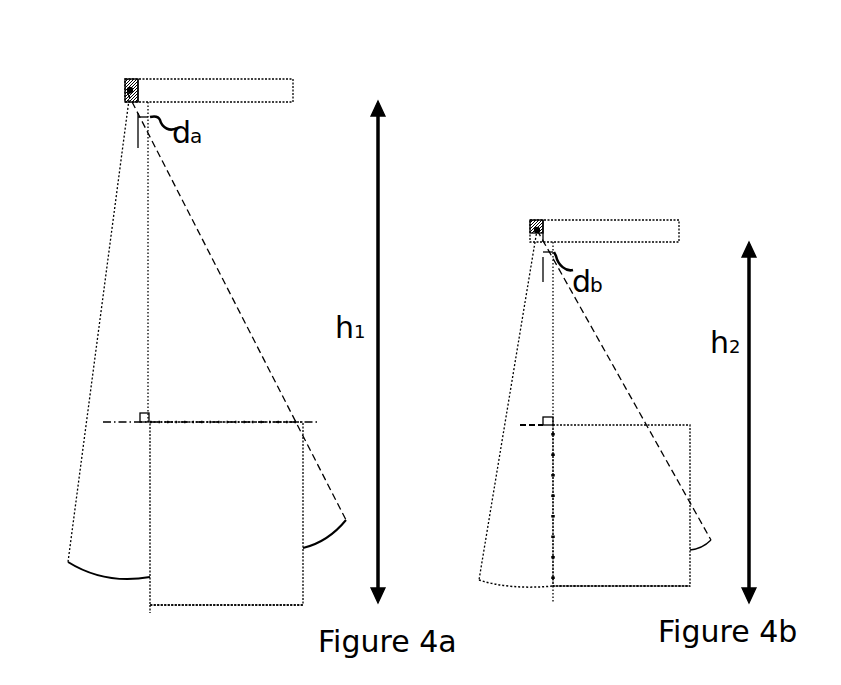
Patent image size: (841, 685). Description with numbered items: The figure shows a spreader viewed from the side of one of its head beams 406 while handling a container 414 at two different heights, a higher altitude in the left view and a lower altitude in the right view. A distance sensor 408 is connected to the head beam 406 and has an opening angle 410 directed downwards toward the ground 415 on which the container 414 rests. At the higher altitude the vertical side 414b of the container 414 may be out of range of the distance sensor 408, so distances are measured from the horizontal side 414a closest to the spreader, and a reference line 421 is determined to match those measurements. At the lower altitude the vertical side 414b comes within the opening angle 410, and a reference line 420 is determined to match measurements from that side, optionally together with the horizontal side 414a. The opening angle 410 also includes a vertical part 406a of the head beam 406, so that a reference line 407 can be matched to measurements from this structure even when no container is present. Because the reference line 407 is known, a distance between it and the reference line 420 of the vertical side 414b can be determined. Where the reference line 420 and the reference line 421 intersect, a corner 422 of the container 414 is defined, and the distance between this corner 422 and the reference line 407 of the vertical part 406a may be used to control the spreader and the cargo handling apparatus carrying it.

In FIG. 4A, the head beam 406 is at (268, 78).
In FIG. 4B, the head beam 406 is at (673, 220).
In FIG. 4A, the vertical part of the head beam 406a is at (140, 95).
In FIG. 4B, the vertical part of the head beam 406a is at (543, 240).
In FIG. 4A, the reference line of the vertical part of the head beam 407 is at (138, 137).
In FIG. 4B, the reference line of the vertical part of the head beam 407 is at (545, 275).
In FIG. 4A, the distance sensor 408 is at (125, 80).
In FIG. 4B, the distance sensor 408 is at (532, 219).
In FIG. 4A, the opening angle 410 is at (207, 335).
In FIG. 4B, the opening angle 410 is at (595, 408).
In FIG. 4A, the container 414 is at (226, 517).
In FIG. 4B, the container 414 is at (621, 505).
In FIG. 4A, the horizontal side of the container 414a is at (242, 425).
In FIG. 4B, the vertical side of the container 414b is at (557, 495).
In FIG. 4A, the ground 415 is at (226, 633).
In FIG. 4B, the ground 415 is at (621, 616).
In FIG. 4A, the reference line of the vertical side 420 is at (153, 400).
In FIG. 4B, the reference line of the vertical side 420 is at (550, 357).
In FIG. 4A, the reference line of the horizontal side 421 is at (117, 425).
In FIG. 4B, the reference line of the horizontal side 421 is at (530, 425).
In FIG. 4A, the corner of the container 422 is at (140, 412).
In FIG. 4B, the corner of the container 422 is at (543, 420).